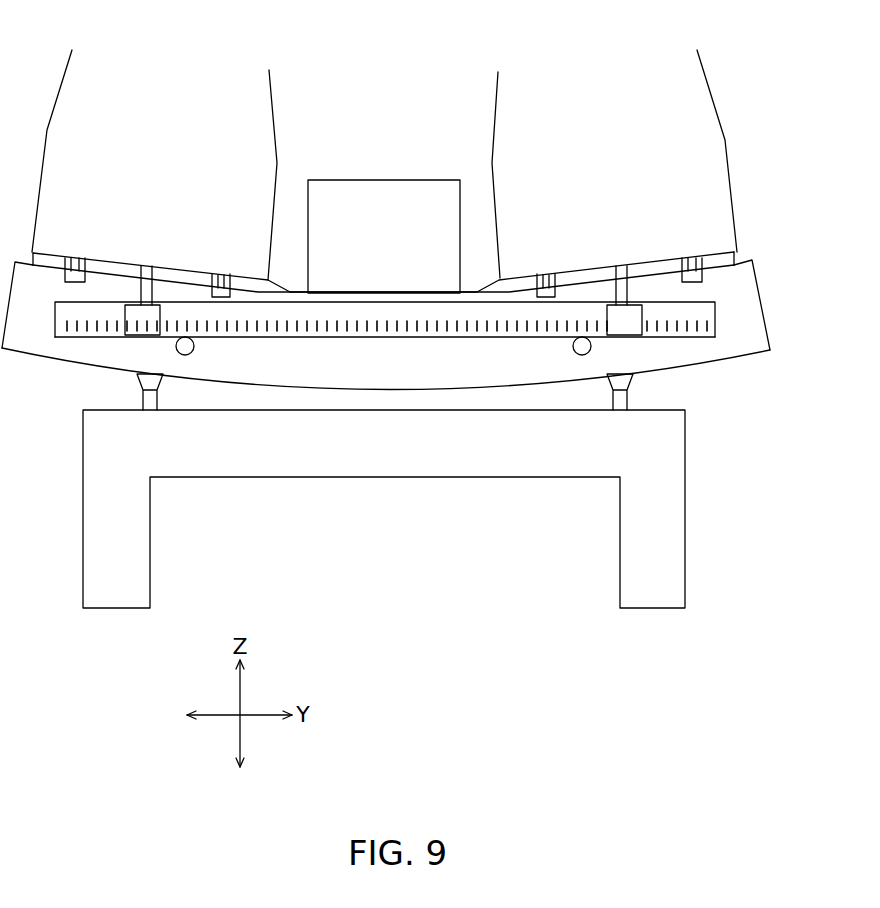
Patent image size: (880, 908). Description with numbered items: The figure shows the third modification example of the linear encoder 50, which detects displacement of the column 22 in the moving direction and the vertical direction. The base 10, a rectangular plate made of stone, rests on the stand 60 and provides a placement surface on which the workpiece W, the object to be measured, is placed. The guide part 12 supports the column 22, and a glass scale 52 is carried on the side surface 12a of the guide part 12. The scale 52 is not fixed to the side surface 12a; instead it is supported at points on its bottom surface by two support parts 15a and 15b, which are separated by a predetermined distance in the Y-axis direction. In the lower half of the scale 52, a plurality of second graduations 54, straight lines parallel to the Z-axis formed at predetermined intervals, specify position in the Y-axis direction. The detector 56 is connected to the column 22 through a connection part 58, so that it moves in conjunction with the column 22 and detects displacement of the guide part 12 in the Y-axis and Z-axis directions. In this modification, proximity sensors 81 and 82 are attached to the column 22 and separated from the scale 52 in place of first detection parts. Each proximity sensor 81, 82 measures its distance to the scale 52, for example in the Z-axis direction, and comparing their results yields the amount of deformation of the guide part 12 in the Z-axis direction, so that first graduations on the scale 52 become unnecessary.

The base 10 is at (404, 329).
The guide part 12 is at (478, 292).
The side surface of the guide part 12a is at (735, 355).
The support part 15a is at (183, 357).
The support part 15b is at (585, 355).
The column 22 is at (717, 163).
The linear encoder 50 is at (723, 303).
The scale 52 is at (407, 292).
The second graduations 54 is at (445, 337).
The detector 56 is at (637, 335).
The connection part 58 is at (620, 268).
The stand 60 is at (676, 451).
The proximity sensor 81 is at (692, 257).
The proximity sensor 82 is at (545, 275).
The workpiece W is at (393, 178).